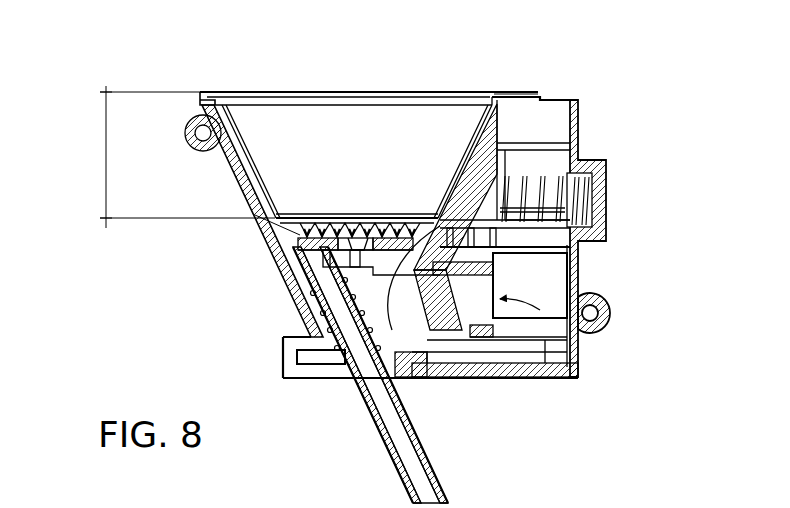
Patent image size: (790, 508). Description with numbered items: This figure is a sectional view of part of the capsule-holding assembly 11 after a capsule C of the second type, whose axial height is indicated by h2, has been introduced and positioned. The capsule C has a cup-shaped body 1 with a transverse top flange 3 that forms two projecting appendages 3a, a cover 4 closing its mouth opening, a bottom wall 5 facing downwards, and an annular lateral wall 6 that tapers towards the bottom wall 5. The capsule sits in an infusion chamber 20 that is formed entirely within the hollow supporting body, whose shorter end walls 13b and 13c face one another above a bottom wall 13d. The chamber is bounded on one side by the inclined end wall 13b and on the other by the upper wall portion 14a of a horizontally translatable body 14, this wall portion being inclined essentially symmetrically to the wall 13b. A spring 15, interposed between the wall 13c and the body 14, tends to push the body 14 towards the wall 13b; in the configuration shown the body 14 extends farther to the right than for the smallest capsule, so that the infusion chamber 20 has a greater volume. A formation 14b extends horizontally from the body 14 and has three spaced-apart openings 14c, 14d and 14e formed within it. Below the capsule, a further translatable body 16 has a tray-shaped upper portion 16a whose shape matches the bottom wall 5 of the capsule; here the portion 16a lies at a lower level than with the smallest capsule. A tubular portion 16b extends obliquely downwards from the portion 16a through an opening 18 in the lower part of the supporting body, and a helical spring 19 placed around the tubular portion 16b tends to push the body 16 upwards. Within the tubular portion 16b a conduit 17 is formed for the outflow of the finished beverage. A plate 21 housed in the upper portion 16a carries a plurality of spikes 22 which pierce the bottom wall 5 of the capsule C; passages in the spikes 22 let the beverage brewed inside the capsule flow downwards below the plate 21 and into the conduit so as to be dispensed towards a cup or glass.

The capsule C is at (272, 84).
The capsule height h2 is at (161, 157).
The cup-shaped body 1 is at (245, 175).
The transverse top flange 3 is at (335, 96).
The projecting appendages 3a is at (517, 97).
The cover 4 is at (424, 168).
The bottom wall 5 is at (287, 268).
The annular lateral wall 6 is at (305, 140).
The capsule-holding assembly 11 is at (226, 281).
The shorter end wall 13b is at (275, 247).
The shorter end wall 13c is at (580, 262).
The bottom wall 13d is at (500, 368).
The body 14 is at (585, 338).
The upper wall portion 14a is at (463, 160).
The formation 14b is at (560, 130).
The opening 14c is at (455, 358).
The opening 14d is at (580, 290).
The opening 14e is at (600, 218).
The spring 15 is at (580, 158).
The body 16 is at (303, 303).
The tray-shaped upper portion 16a is at (270, 257).
The tubular portion 16b is at (370, 420).
The conduit 17 is at (390, 450).
The opening 18 is at (410, 418).
The helical spring 19 is at (283, 340).
The infusion chamber 20 is at (247, 113).
The plate 21 is at (421, 170).
The spikes 22 is at (390, 222).